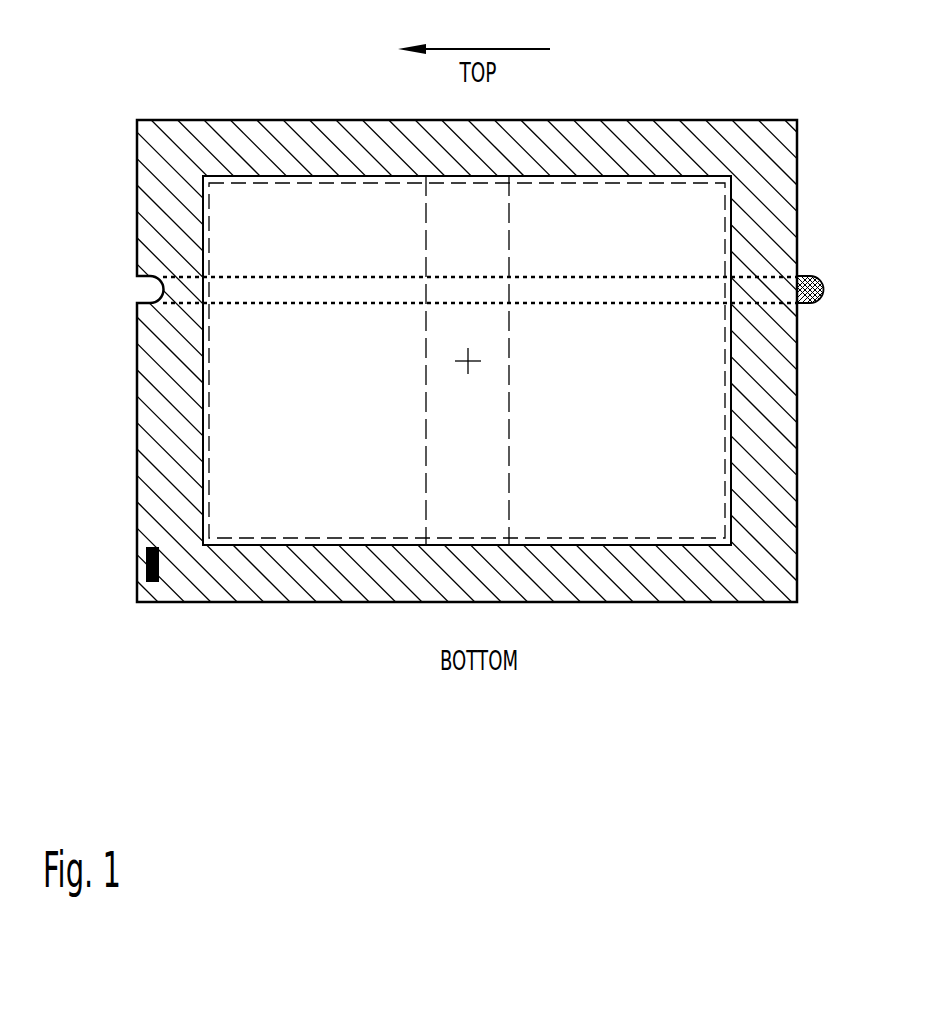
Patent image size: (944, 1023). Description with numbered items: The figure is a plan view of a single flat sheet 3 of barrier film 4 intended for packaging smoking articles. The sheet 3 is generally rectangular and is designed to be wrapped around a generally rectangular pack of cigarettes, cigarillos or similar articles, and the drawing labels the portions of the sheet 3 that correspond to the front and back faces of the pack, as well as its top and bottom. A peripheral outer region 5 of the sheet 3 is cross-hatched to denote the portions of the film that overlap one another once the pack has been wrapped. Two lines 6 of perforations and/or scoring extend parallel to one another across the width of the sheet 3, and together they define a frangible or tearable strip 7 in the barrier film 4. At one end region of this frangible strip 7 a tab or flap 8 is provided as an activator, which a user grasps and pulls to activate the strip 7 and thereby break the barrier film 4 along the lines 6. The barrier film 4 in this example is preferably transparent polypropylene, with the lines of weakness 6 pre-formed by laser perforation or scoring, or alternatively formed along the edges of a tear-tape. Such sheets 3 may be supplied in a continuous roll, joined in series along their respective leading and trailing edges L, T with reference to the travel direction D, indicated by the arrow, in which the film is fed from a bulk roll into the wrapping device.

The sheet 3 is at (468, 432).
The barrier film 4 is at (604, 521).
The peripheral outer region 5 is at (148, 364).
The lines of perforations and/or scoring 6 is at (480, 285).
The frangible strip 7 is at (364, 262).
The tab or flap 8 is at (816, 304).
The travel direction D is at (474, 31).
The trailing edge T is at (797, 421).
The leading edge L is at (137, 473).